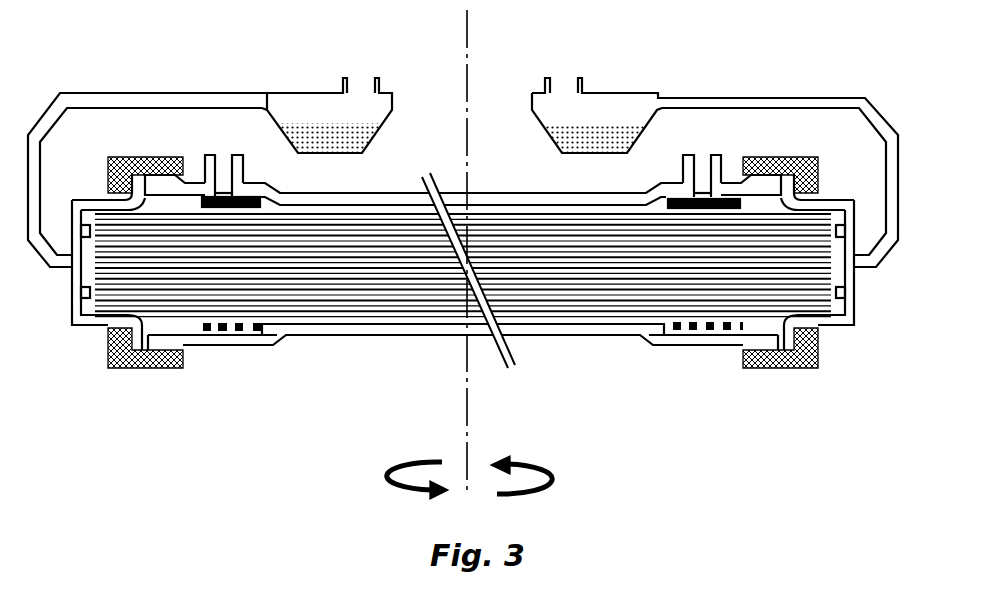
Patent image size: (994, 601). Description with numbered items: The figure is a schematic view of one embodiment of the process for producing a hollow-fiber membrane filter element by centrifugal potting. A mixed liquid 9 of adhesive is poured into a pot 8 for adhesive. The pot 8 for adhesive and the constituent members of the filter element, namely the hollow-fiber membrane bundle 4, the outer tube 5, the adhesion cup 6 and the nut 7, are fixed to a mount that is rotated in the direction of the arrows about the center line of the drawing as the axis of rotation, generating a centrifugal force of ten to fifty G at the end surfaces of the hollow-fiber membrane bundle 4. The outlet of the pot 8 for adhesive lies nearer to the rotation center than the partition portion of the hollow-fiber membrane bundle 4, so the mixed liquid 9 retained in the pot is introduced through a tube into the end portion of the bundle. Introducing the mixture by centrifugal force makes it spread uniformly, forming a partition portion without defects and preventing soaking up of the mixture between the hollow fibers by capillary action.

The hollow-fiber membrane bundle 4 is at (331, 295).
The outer tube 5 is at (560, 333).
The adhesion cup 6 is at (842, 195).
The nut 7 is at (812, 363).
The pot for adhesive 8 is at (622, 92).
The mixed liquid 9 is at (578, 128).